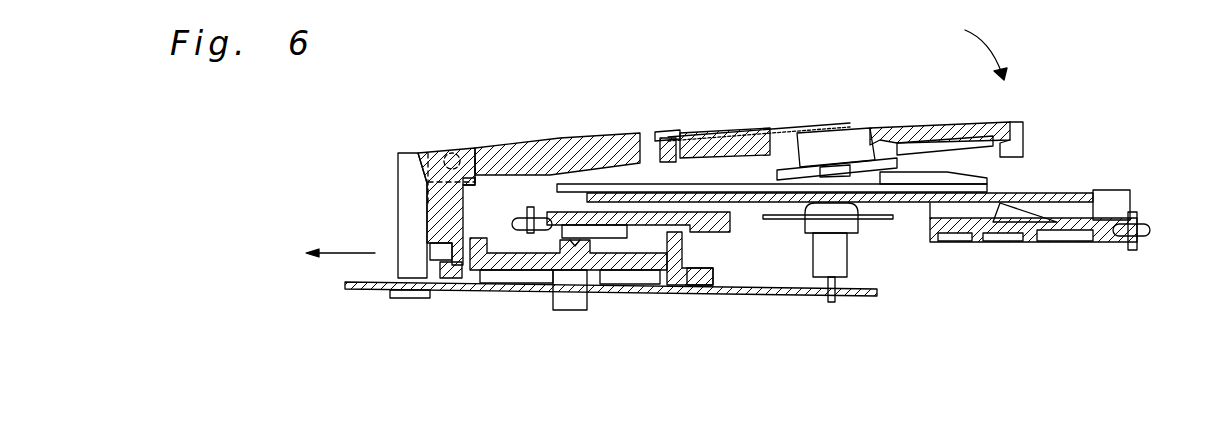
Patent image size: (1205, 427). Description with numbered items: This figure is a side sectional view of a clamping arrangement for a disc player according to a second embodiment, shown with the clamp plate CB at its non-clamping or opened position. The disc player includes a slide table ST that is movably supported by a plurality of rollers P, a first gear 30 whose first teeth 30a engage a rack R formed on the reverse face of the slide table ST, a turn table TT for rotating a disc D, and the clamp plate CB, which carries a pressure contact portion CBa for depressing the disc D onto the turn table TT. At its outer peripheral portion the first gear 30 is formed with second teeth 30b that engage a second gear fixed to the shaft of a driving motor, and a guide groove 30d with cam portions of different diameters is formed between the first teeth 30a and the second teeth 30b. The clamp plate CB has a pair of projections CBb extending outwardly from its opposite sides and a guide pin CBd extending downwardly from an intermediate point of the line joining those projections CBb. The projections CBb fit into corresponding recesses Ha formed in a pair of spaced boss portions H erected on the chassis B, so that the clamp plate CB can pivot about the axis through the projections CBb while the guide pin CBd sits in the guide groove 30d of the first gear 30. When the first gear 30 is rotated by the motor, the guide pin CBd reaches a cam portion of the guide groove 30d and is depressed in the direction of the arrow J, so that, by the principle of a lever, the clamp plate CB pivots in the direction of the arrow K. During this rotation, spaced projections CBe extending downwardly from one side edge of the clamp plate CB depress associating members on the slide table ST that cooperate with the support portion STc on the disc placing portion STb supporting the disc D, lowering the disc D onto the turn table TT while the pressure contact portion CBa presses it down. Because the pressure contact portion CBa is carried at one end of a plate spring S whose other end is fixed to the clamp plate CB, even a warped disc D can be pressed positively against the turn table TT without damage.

The boss portion H is at (398, 185).
The recess Ha is at (452, 153).
The projection CBb is at (462, 157).
The clamp plate CB is at (755, 128).
The projection CBe is at (660, 136).
The plate spring S is at (724, 126).
The pressure contact portion CBa is at (860, 132).
The arrow K is at (992, 70).
The disc D is at (1050, 193).
The roller P is at (525, 215).
The slide table ST is at (1013, 240).
The disc placing portion STb is at (960, 212).
The support portion STc is at (665, 212).
The turn table TT is at (888, 222).
The rack R is at (682, 262).
The first gear 30 is at (612, 287).
The first teeth 30a is at (490, 270).
The guide groove 30d is at (447, 272).
The second teeth 30b is at (435, 278).
The guide pin CBd is at (463, 265).
The chassis B is at (795, 292).
The arrow J is at (328, 258).